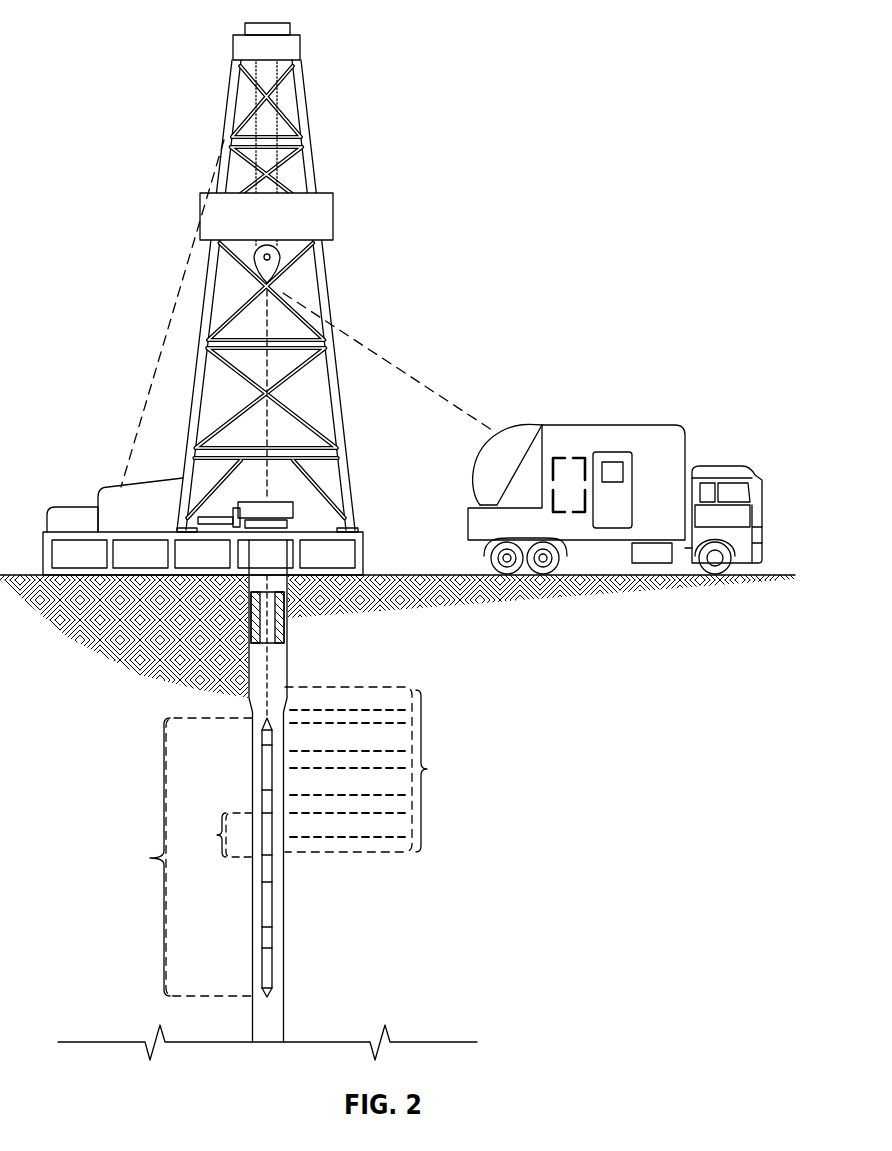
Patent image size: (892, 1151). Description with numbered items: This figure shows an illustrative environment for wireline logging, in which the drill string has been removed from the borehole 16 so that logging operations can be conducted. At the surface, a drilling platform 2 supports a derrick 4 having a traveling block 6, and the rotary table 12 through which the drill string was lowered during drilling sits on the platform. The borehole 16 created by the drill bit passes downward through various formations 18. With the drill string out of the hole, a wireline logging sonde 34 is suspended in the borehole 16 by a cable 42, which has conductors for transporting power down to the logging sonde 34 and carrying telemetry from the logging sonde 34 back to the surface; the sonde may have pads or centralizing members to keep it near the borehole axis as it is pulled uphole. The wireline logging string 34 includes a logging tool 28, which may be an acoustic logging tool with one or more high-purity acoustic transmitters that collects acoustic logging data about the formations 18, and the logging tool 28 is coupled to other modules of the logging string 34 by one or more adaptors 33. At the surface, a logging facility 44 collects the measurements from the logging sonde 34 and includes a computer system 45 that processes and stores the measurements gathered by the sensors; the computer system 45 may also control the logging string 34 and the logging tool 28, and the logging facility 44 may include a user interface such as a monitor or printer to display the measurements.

The drilling platform 2 is at (365, 556).
The derrick 4 is at (330, 288).
The traveling block 6 is at (254, 259).
The rotary table 12 is at (285, 503).
The borehole 16 is at (251, 738).
The formations 18 is at (375, 769).
The logging tool 28 is at (218, 835).
The adaptors 33 is at (267, 803).
The wireline logging sonde 34 is at (185, 857).
The cable 42 is at (386, 354).
The logging facility 44 is at (612, 424).
The computer system 45 is at (576, 458).